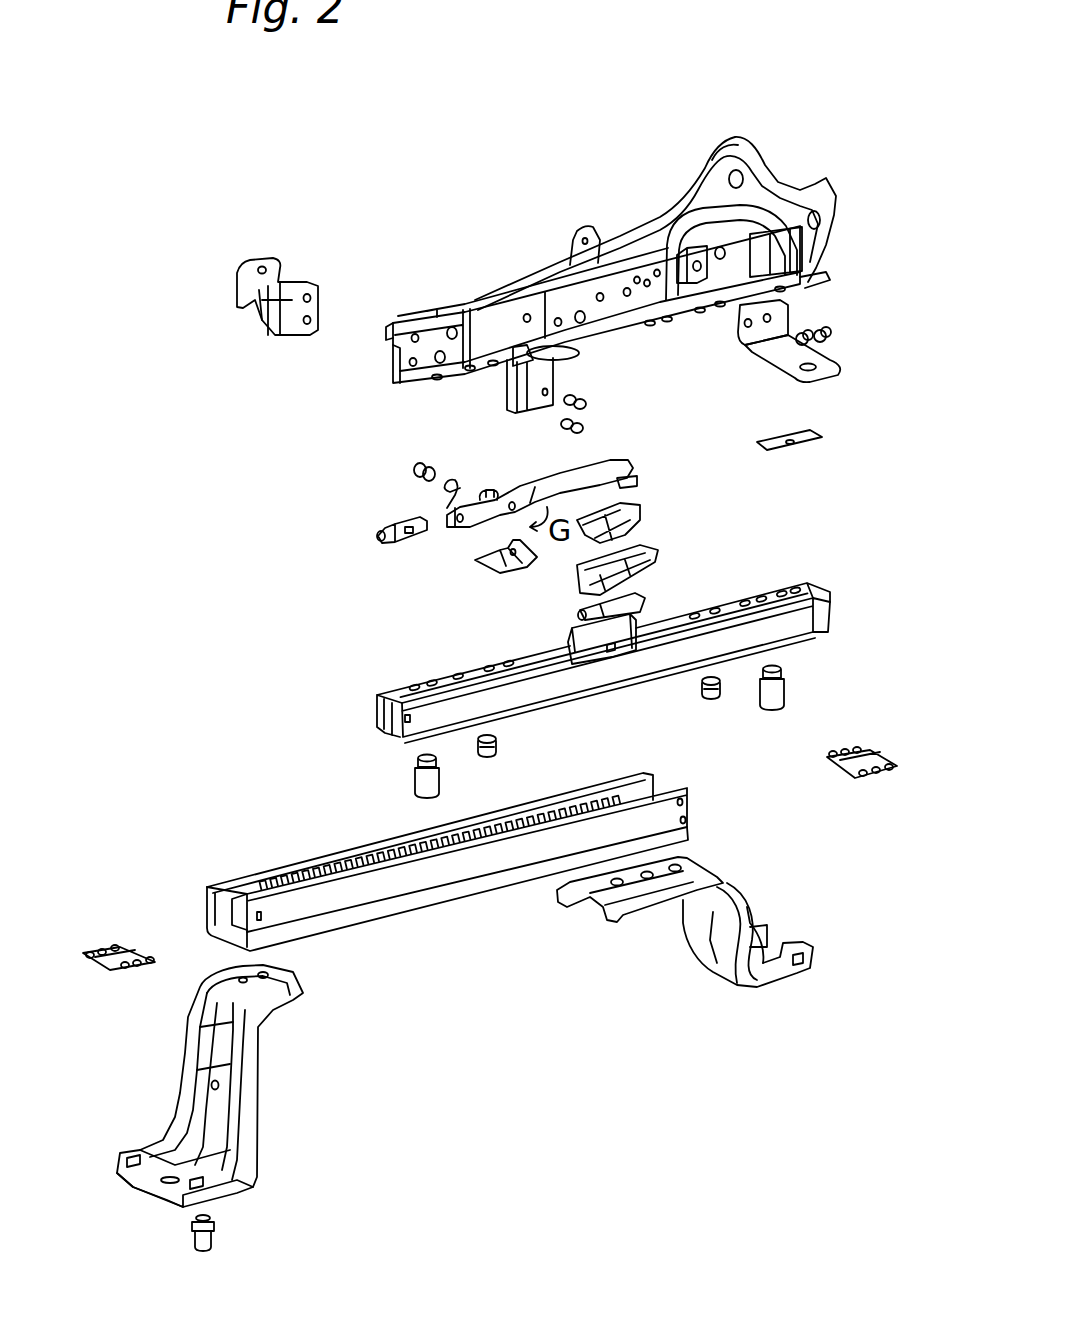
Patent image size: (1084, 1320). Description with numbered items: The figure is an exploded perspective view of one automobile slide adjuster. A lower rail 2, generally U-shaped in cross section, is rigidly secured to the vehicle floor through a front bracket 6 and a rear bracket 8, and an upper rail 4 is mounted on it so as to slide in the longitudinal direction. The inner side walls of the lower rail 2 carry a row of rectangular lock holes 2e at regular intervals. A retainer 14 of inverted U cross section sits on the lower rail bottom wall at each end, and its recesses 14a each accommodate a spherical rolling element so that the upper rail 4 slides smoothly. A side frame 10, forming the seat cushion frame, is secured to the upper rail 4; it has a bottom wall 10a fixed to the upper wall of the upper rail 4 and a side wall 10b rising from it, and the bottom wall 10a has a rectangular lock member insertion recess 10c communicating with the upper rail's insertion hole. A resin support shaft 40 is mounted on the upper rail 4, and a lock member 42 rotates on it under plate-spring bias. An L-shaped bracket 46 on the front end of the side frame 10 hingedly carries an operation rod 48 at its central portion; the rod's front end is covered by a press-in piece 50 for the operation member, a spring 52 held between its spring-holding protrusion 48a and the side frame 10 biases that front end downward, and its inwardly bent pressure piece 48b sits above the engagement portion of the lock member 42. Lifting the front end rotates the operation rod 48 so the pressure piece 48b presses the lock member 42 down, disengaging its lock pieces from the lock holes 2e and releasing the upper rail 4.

The lower rail 2 is at (199, 887).
The lock holes 2e is at (317, 866).
The upper rail 4 is at (371, 743).
The front bracket 6 is at (260, 1100).
The rear bracket 8 is at (687, 950).
The side frame 10 is at (767, 183).
The bottom wall 10a is at (423, 386).
The side wall 10b is at (503, 316).
The lock member insertion recess 10c is at (620, 337).
The retainer 14 is at (852, 783).
The recesses 14a is at (873, 783).
The support shaft 40 is at (643, 600).
The lock member 42 is at (660, 553).
The L-shaped bracket 46 is at (513, 573).
The operation rod 48 is at (587, 463).
The spring-holding protrusion 48a is at (478, 497).
The pressure piece 48b is at (635, 488).
The press-in piece 50 is at (398, 543).
The spring 52 is at (433, 492).